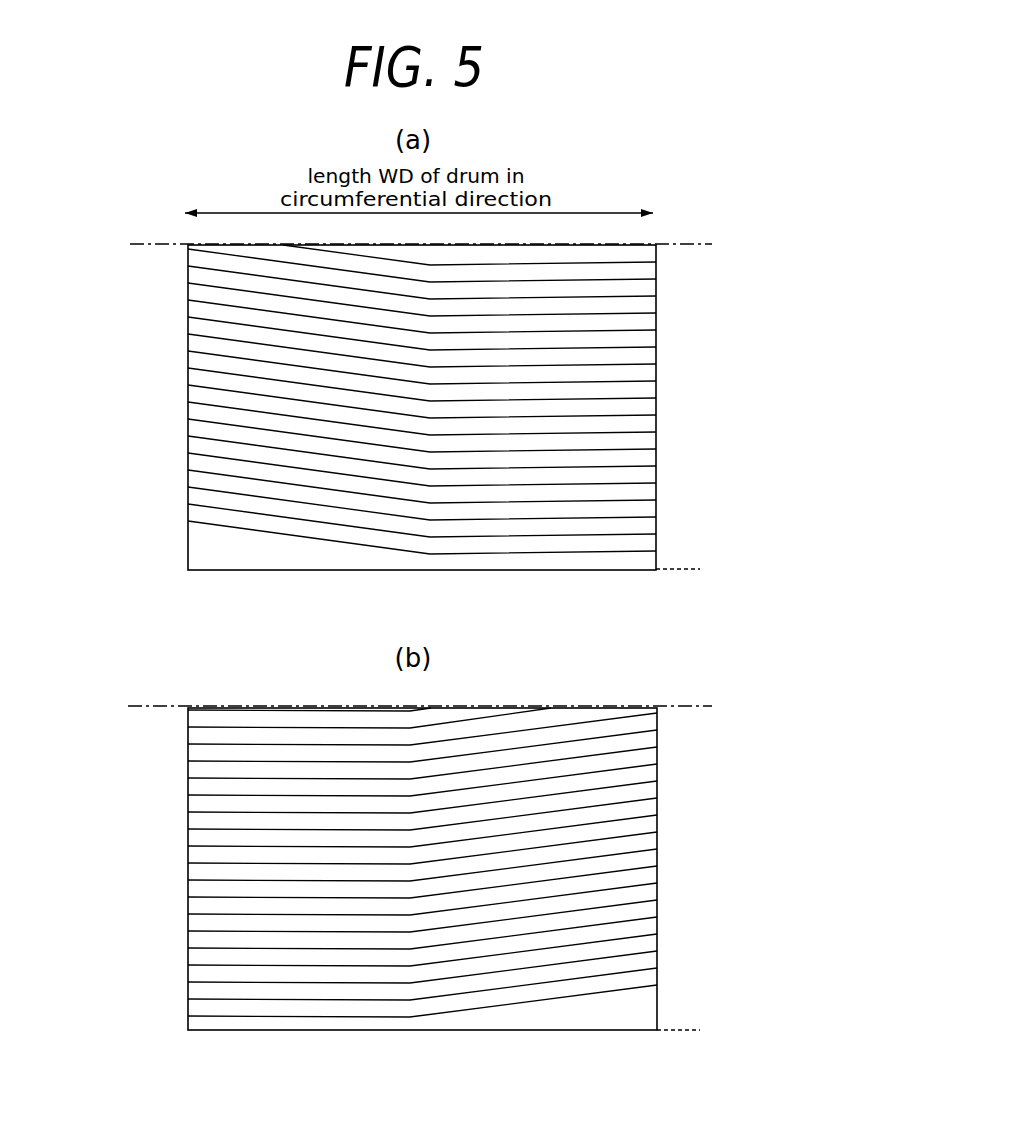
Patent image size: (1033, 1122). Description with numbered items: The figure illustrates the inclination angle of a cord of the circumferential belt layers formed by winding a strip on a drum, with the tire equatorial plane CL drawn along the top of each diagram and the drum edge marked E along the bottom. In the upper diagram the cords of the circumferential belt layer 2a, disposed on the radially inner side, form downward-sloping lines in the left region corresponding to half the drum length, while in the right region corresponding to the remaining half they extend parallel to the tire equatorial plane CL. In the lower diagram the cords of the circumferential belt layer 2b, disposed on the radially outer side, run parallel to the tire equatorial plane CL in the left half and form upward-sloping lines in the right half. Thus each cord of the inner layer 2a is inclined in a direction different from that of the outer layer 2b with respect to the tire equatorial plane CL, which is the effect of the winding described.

The circumferential belt layer disposed in the radially inner side 2a is at (187, 527).
The circumferential belt layer disposed in the radially outer side 2b is at (187, 986).
The tire equatorial plane CL is at (440, 476).
The edge of drum E is at (691, 799).
The element cord is at (518, 554).